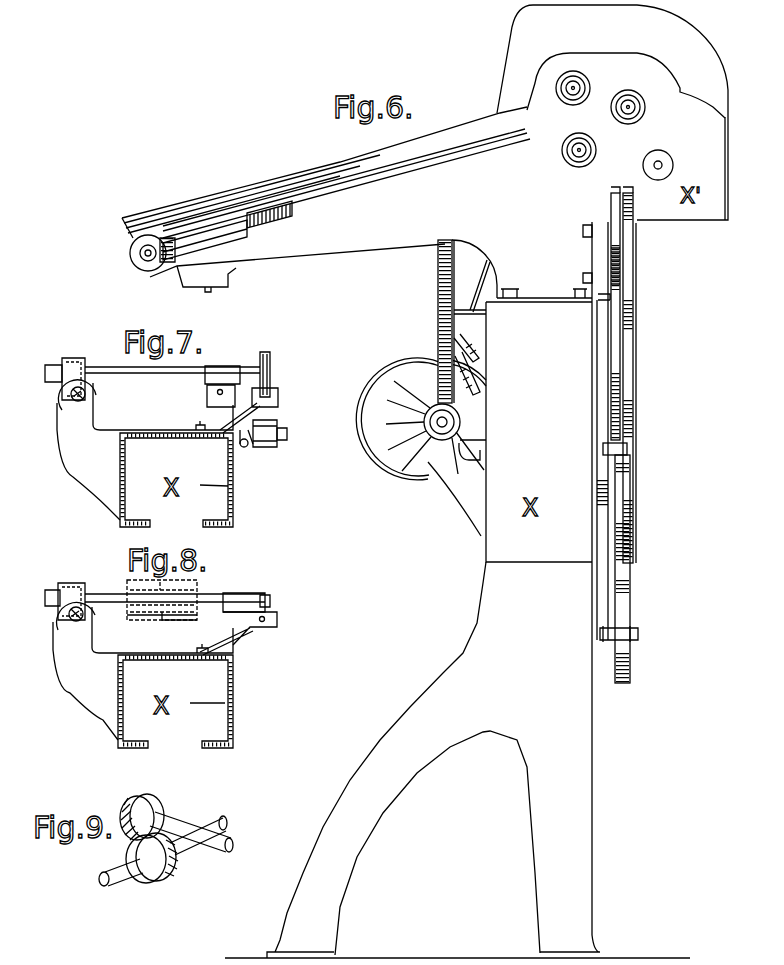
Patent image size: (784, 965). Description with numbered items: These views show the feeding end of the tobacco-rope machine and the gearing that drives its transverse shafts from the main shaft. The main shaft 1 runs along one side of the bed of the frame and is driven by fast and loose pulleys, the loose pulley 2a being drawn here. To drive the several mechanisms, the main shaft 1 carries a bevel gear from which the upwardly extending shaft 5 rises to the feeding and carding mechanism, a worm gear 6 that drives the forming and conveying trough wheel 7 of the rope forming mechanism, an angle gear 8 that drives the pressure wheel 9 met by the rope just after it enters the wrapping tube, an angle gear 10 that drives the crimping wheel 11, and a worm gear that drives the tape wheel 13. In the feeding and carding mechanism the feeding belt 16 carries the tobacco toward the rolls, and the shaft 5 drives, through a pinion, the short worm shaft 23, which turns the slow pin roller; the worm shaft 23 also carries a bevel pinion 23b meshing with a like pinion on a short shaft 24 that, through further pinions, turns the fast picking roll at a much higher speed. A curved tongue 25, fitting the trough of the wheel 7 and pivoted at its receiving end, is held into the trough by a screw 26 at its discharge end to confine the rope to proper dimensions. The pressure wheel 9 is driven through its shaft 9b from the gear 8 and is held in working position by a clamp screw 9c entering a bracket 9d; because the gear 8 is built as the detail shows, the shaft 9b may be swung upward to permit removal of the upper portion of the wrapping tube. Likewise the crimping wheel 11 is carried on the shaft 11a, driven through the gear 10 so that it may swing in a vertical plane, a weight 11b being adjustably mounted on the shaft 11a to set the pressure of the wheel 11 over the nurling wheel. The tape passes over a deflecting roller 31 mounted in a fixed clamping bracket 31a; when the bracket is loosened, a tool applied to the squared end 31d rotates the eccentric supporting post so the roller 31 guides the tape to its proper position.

In FIG. 6, the main shaft 1 is at (430, 437).
In FIG. 7, the main shaft 1 is at (86, 395).
In FIG. 8, the main shaft 1 is at (70, 622).
In FIG. 9, the main shaft 1 is at (109, 870).
In FIG. 6, the loose pulley 2a is at (382, 433).
In FIG. 6, the upwardly extending shaft 5 is at (476, 292).
In FIG. 6, the worm gear 6 is at (437, 400).
In FIG. 6, the forming and conveying trough wheel 7 is at (637, 278).
In FIG. 7, the angle gear 8 is at (76, 359).
In FIG. 7, the pressure wheel 9 is at (271, 378).
In FIG. 7, the shaft 9b is at (155, 374).
In FIG. 7, the clamp screw 9c is at (212, 403).
In FIG. 7, the bracket 9d is at (216, 393).
In FIG. 8, the angle gear 10 is at (70, 583).
In FIG. 8, the crimping wheel 11 is at (260, 595).
In FIG. 8, the shaft 11a is at (115, 603).
In FIG. 9, the shaft 11a is at (177, 827).
In FIG. 8, the weight 11b is at (165, 606).
In FIG. 6, the tape wheel 13 is at (636, 488).
In FIG. 6, the feeding belt 16 is at (170, 278).
In FIG. 6, the worm shaft 23 is at (625, 230).
In FIG. 6, the bevel pinion 23b is at (617, 248).
In FIG. 7, the short shaft 24 is at (279, 397).
In FIG. 8, the short shaft 24 is at (278, 620).
In FIG. 6, the tongue 25 is at (626, 350).
In FIG. 6, the screw 26 is at (628, 447).
In FIG. 7, the deflecting roller 31 is at (268, 447).
In FIG. 7, the fixed bracket 31a is at (245, 448).
In FIG. 7, the squared end 31d is at (290, 433).